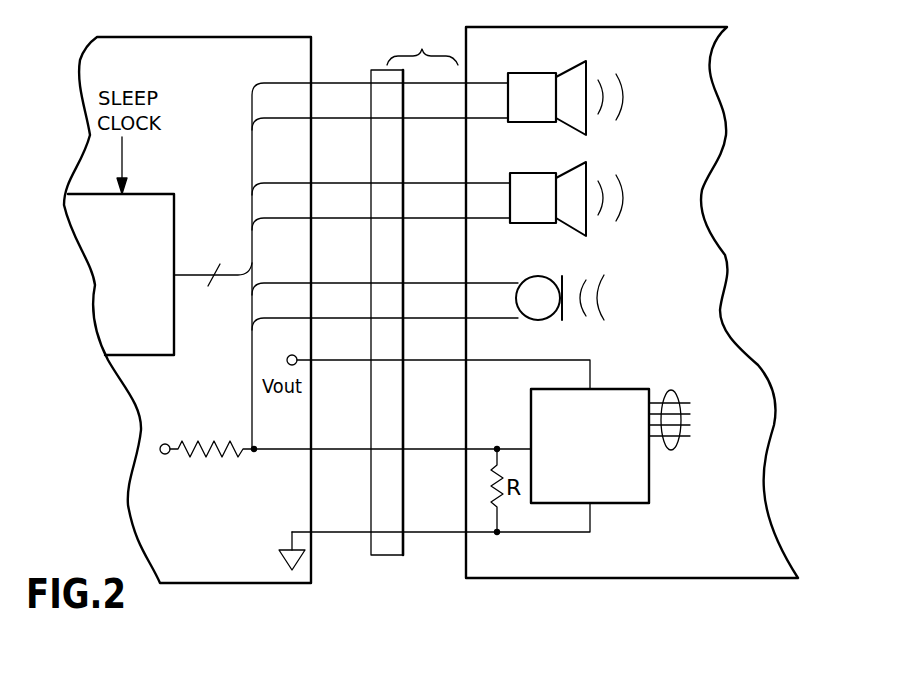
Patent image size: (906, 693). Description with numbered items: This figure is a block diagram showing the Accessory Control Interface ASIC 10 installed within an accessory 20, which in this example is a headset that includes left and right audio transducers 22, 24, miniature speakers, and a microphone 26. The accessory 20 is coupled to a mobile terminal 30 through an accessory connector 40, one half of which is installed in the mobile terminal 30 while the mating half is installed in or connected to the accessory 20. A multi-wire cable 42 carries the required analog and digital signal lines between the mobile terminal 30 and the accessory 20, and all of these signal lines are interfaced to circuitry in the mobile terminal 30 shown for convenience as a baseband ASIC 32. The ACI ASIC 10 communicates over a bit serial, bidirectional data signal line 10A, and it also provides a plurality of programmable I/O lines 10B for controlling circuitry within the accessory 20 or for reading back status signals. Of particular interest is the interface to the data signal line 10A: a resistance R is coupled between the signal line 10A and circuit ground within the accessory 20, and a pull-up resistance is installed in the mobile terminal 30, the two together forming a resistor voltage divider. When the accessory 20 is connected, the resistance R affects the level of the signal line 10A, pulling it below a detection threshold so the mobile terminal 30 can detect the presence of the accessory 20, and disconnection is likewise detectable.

The ACI ASIC 10 is at (652, 483).
The communications port / bit serial bidirectional data signal line 10A is at (330, 452).
The programmable I/O lines 10B is at (668, 392).
The accessory 20 is at (575, 578).
The left audio transducer 22 is at (520, 73).
The right audio transducer 24 is at (520, 173).
The microphone 26 is at (538, 276).
The mobile terminal 30 is at (210, 583).
The baseband ASIC 32 is at (174, 222).
The accessory connector 40 is at (393, 340).
The multi-wire cable 42 is at (422, 44).